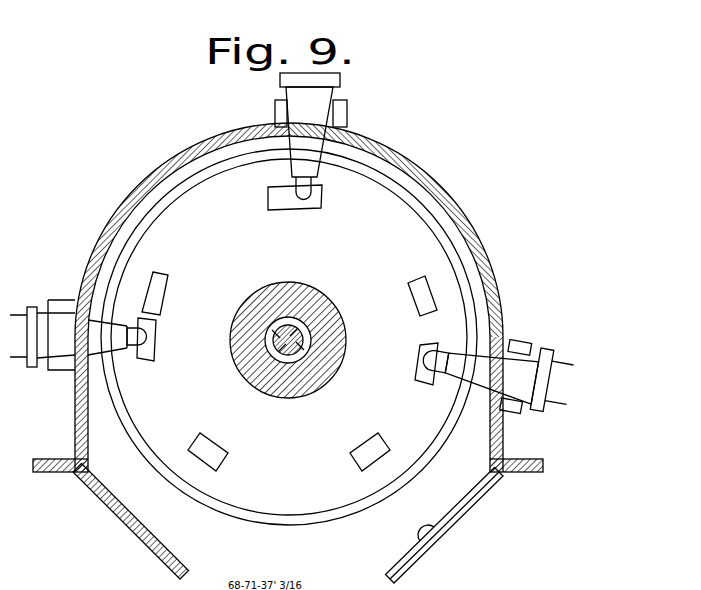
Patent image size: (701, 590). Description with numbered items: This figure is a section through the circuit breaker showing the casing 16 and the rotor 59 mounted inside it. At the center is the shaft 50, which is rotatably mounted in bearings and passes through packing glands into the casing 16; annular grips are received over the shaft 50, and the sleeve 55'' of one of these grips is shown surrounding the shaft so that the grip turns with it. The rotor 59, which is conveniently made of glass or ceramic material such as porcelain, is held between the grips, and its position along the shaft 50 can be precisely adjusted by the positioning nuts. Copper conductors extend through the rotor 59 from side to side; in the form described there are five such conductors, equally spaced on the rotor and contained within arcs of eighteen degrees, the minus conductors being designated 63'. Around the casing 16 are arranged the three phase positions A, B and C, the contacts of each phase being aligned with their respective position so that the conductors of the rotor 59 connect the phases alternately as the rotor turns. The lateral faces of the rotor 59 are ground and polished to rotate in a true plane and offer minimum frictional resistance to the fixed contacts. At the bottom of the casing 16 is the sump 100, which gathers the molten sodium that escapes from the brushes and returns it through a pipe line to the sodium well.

The casing 16 is at (502, 242).
The rotor 59 is at (393, 215).
The shaft 50 is at (300, 338).
The sleeve 55'' is at (330, 348).
The minus conductors 63' is at (336, 328).
The sump 100 is at (436, 534).
The phase A is at (46, 352).
The phase B is at (333, 95).
The phase C is at (535, 392).